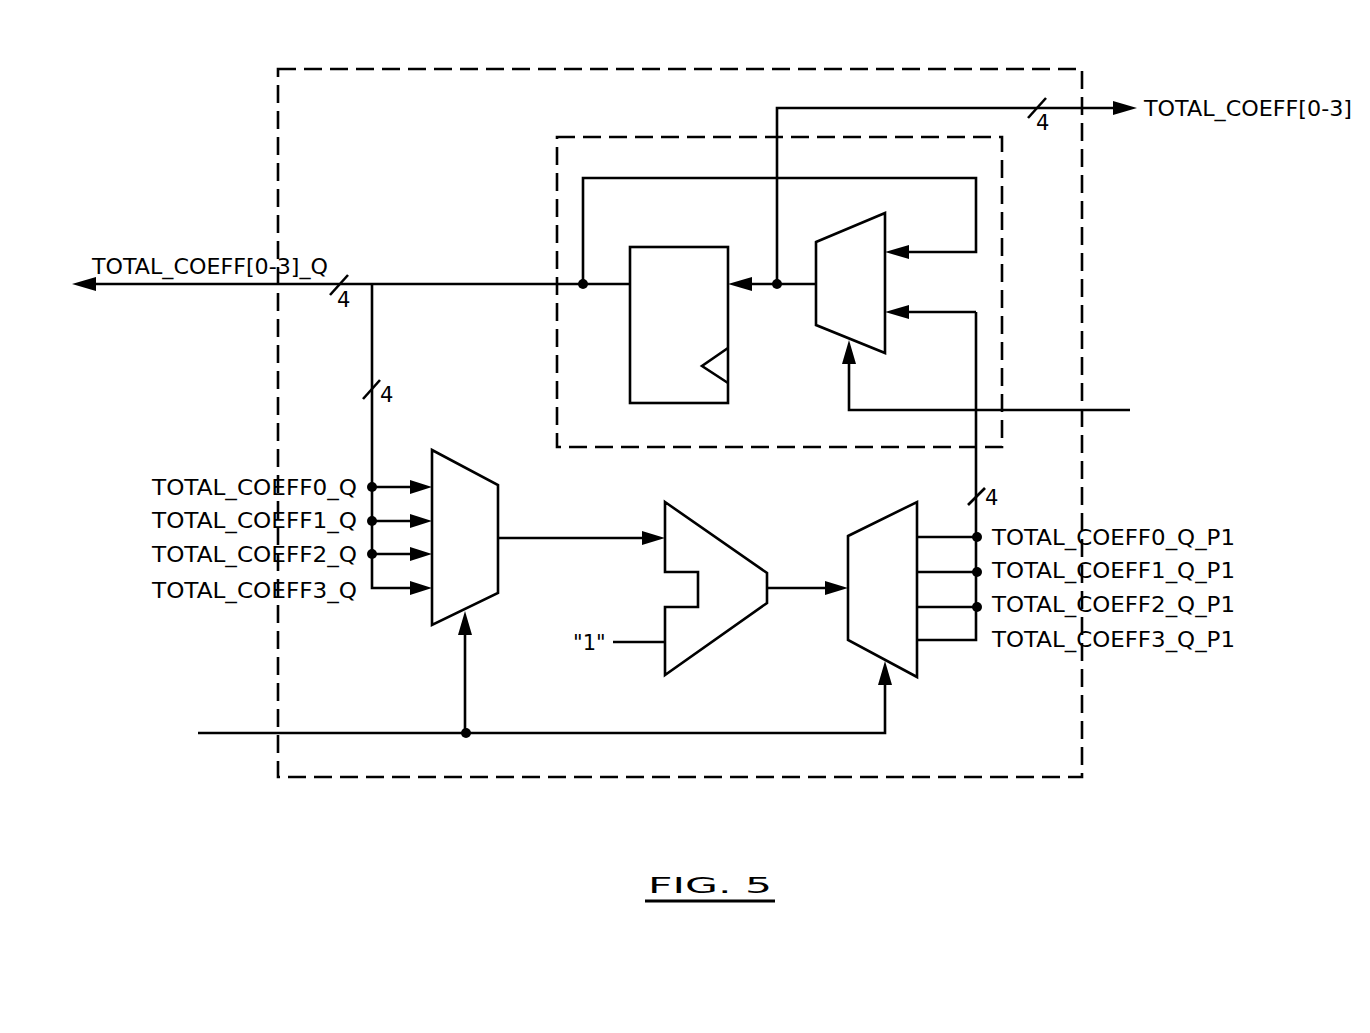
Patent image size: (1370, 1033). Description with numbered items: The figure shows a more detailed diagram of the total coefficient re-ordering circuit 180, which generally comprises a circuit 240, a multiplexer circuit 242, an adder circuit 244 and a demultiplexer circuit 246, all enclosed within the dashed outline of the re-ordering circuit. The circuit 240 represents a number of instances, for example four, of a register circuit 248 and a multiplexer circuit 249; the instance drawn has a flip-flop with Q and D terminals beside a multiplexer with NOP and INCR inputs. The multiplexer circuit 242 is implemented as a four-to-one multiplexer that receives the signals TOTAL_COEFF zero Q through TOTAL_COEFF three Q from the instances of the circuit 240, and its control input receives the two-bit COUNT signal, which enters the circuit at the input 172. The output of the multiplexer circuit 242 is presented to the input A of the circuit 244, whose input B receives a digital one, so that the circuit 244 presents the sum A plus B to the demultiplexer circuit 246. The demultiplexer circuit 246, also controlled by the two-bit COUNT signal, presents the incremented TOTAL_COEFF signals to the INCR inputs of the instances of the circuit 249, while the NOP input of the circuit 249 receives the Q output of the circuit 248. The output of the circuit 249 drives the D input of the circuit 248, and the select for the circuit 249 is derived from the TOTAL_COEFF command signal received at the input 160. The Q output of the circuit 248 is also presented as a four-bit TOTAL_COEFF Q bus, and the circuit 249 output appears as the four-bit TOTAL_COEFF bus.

The total coefficient re-ordering circuit 180 is at (403, 45).
The circuit 240 is at (598, 137).
The multiplexer circuit 242 is at (465, 467).
The circuit 244 is at (698, 523).
The demultiplexer circuit 246 is at (878, 521).
The circuit 248 is at (690, 246).
The circuit 249 is at (862, 222).
The input 160 is at (1085, 411).
The input 172 is at (275, 736).